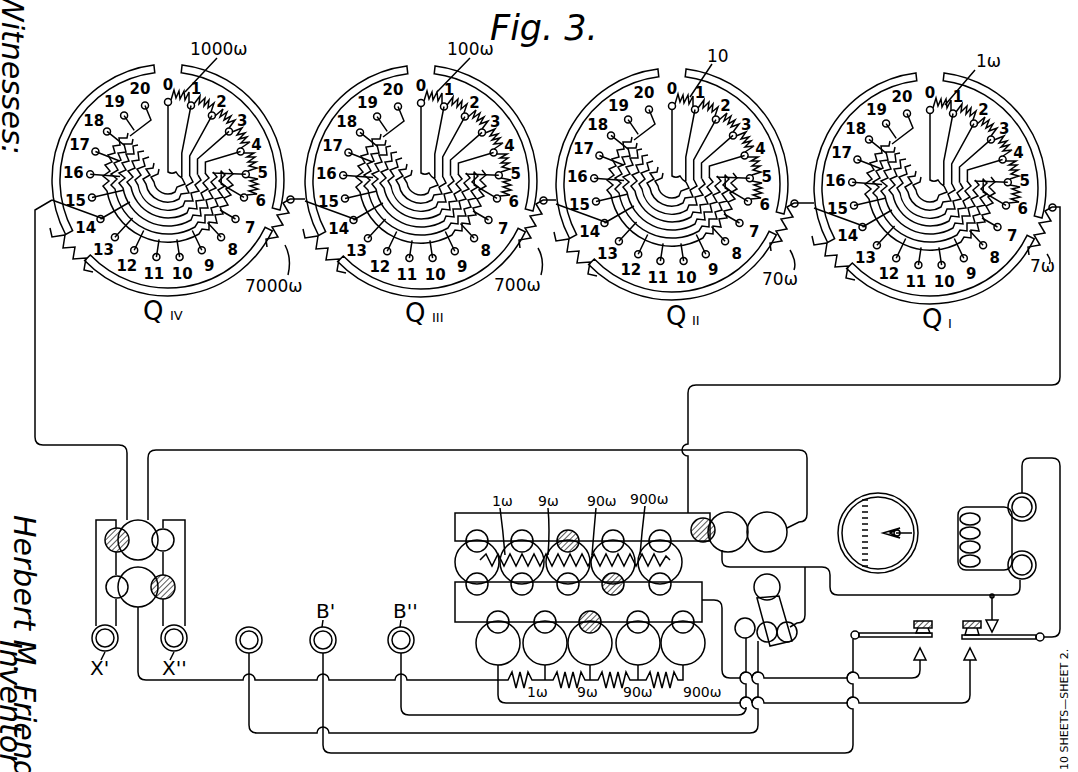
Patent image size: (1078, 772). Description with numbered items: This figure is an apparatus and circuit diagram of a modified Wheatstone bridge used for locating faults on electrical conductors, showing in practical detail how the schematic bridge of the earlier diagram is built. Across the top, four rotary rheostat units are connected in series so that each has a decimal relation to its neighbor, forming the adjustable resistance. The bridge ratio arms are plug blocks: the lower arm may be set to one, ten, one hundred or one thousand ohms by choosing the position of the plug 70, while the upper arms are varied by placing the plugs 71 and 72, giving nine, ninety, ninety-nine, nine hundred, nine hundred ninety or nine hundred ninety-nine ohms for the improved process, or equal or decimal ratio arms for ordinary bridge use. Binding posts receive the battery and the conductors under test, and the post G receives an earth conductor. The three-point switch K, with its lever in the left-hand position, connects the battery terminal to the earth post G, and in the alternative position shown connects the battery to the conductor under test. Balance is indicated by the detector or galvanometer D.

The plug 70 is at (600, 617).
The plug 71 is at (625, 583).
The plug 72 is at (570, 528).
The detector or galvanometer D is at (963, 507).
The three-point switch K is at (773, 610).
The post for attachment of an earth conductor G is at (249, 627).